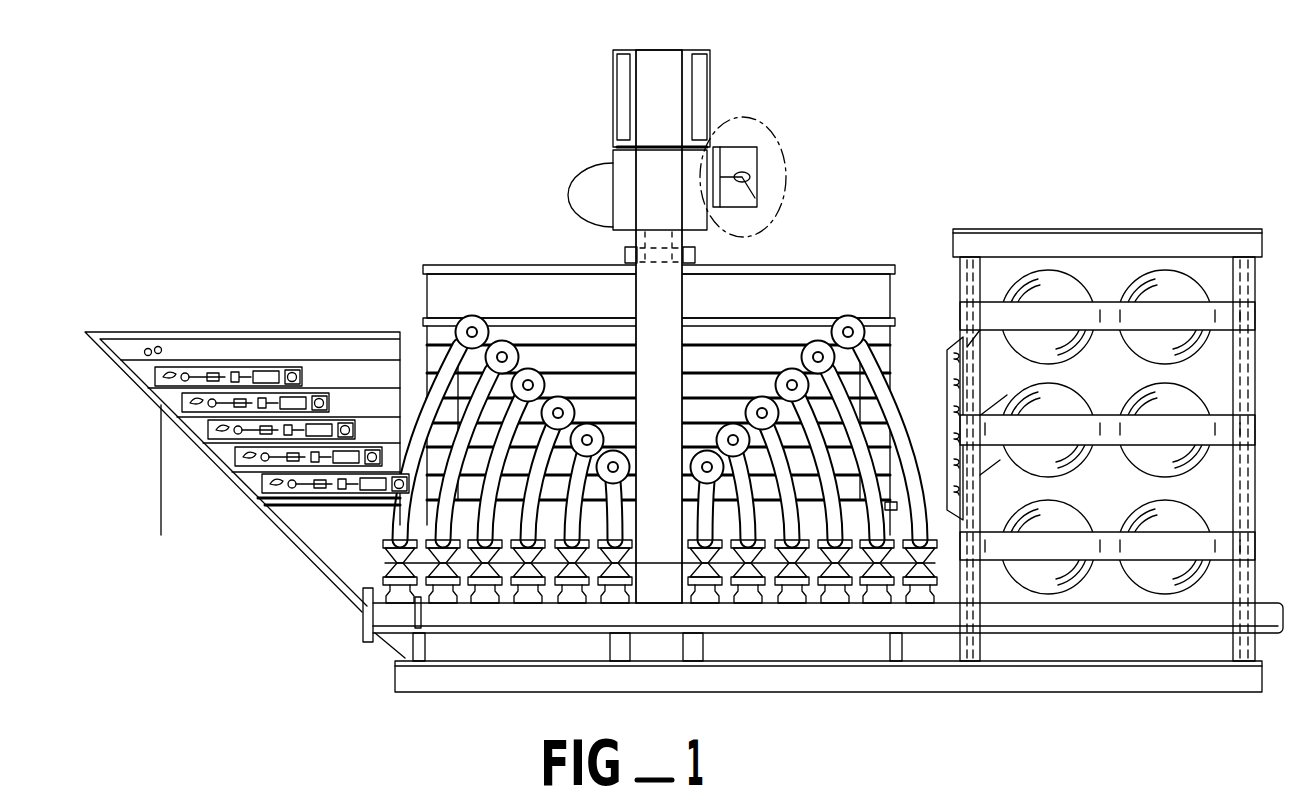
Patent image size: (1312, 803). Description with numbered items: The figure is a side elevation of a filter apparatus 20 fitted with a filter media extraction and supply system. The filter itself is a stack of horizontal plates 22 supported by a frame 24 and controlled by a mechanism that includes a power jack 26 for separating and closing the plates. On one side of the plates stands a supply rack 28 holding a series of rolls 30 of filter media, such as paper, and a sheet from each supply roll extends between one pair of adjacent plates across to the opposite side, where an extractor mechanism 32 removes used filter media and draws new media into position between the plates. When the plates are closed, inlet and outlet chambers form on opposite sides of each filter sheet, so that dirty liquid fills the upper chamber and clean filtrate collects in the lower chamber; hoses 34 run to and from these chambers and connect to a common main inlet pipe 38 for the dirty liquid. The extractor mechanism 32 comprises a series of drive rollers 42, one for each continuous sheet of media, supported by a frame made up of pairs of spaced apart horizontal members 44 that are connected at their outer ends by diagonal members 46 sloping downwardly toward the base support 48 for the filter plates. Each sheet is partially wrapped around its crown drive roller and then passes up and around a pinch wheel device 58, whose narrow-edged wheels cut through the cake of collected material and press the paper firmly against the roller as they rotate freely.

The filter apparatus 20 is at (836, 222).
The horizontal plates 22 is at (882, 340).
The frame 24 is at (640, 300).
The power jack 26 is at (735, 157).
The supply rack 28 is at (1068, 222).
The rolls of filter media 30 is at (421, 350).
The extractor mechanism 32 is at (298, 322).
The hoses 34 is at (926, 519).
The main inlet pipe 38 is at (848, 622).
The drive rollers 42 is at (145, 350).
The horizontal members 44 is at (318, 391).
The diagonal members 46 is at (143, 390).
The base support 48 is at (440, 695).
The pinch wheel device 58 is at (162, 350).